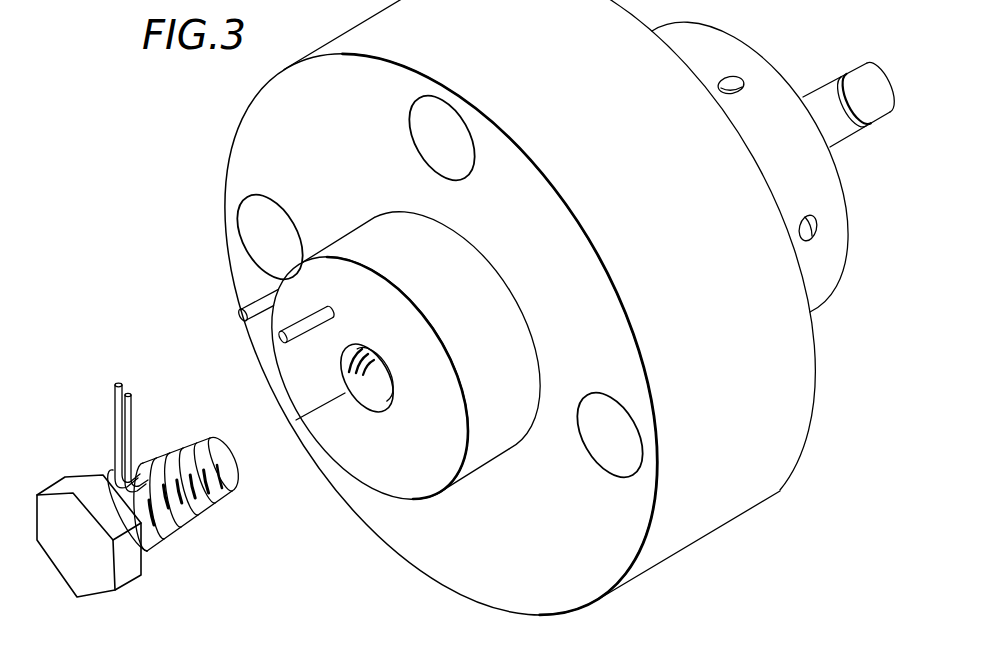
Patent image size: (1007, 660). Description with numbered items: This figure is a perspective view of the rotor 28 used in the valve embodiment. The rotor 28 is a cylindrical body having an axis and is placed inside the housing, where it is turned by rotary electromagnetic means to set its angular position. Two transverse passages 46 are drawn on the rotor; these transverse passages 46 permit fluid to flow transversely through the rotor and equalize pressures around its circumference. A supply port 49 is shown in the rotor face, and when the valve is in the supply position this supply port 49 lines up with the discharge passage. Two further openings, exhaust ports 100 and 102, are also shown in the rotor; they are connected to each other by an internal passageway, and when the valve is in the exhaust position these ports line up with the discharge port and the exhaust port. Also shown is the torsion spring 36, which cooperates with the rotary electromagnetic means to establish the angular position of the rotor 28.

The rotor 28 is at (775, 480).
The torsion spring 36 is at (160, 540).
The transverse passages 46 is at (733, 80).
The supply port 49 is at (470, 135).
The exhaust port 100 is at (281, 266).
The exhaust port 102 is at (640, 432).